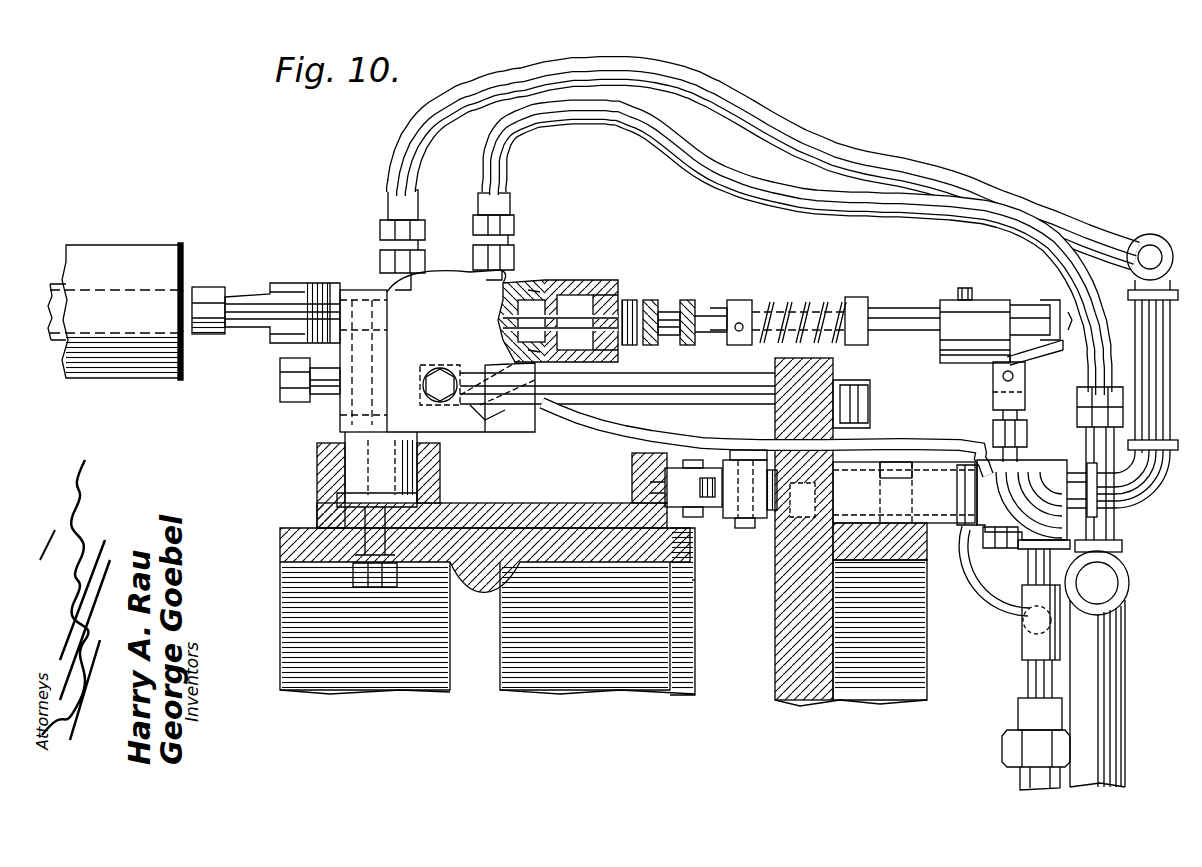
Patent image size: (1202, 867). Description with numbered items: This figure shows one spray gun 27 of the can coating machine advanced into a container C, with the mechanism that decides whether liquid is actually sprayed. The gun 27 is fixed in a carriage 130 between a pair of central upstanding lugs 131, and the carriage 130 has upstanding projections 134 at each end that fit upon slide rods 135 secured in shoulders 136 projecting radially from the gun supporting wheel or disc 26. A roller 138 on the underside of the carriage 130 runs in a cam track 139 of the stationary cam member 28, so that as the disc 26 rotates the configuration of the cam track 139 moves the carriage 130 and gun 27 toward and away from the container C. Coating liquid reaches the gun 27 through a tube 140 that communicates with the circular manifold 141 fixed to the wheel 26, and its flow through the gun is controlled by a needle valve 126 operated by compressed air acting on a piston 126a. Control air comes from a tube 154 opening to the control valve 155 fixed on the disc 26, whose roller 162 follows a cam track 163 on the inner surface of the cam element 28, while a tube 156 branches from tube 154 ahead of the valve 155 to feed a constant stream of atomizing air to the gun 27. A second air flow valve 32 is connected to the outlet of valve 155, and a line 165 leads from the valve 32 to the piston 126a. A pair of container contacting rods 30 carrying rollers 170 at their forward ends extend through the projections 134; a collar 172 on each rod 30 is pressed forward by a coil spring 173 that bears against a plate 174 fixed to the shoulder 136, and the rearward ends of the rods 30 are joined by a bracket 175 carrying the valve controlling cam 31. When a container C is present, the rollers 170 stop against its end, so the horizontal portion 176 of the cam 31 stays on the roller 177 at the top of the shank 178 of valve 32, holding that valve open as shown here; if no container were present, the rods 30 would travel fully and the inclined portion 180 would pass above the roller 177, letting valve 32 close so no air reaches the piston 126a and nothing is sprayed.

The container C is at (116, 252).
The rollers 170 is at (188, 311).
The spray gun 27 is at (250, 294).
The container contacting rods 30 is at (262, 318).
The upstanding lugs 131 is at (428, 368).
The upstanding projections 134 is at (342, 388).
The carriage 130 is at (518, 424).
The tube 140 is at (756, 121).
The line 165 is at (522, 148).
The needle valve 126 is at (592, 300).
The piston 126a is at (527, 284).
The rods 135 is at (725, 405).
The shoulders 136 is at (772, 366).
The wheel or disc 26 is at (940, 668).
The control valve 155 is at (905, 493).
The air flow valve 32 is at (1030, 474).
The tube 154 is at (1026, 688).
The tube 156 is at (978, 588).
The manifold 141 is at (1117, 708).
The collar 172 is at (742, 300).
The coil spring 173 is at (802, 318).
The plate 174 is at (864, 302).
The bracket 175 is at (998, 308).
The valve controlling cam 31 is at (1018, 345).
The inclined portion 180 is at (1066, 330).
The horizontal portion 176 is at (950, 362).
The roller 177 is at (995, 386).
The shank 178 is at (1020, 422).
The roller 138 is at (345, 465).
The cam track 139 is at (420, 470).
The roller 162 is at (660, 487).
The cam track 28 is at (463, 611).
The cam track 163 is at (698, 597).